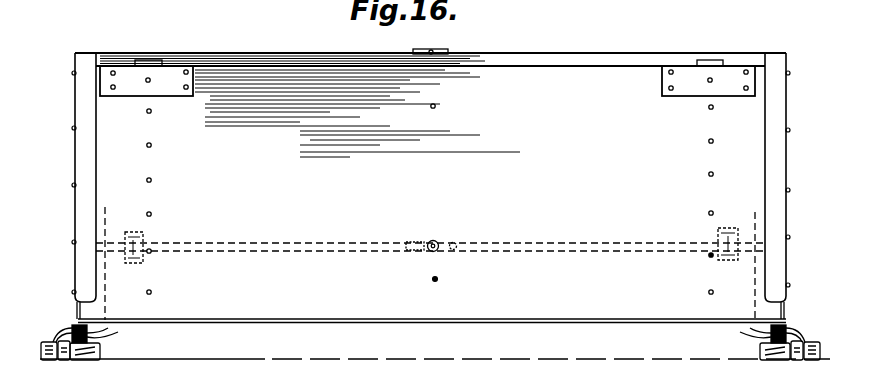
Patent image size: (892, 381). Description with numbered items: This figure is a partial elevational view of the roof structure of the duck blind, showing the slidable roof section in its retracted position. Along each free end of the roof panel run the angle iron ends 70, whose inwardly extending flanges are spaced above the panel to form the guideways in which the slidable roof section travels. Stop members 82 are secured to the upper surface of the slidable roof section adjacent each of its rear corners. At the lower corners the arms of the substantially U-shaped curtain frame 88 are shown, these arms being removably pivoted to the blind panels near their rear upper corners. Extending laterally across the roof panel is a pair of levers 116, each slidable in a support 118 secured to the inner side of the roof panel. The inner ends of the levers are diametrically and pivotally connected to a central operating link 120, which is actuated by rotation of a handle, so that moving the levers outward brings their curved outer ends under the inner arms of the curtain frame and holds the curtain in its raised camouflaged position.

The angle iron end 70 is at (85, 165).
The stop member 82 is at (180, 89).
The curtain frame 88 is at (98, 332).
The lever 116 is at (290, 242).
The support 118 is at (148, 238).
The operating link 120 is at (440, 240).